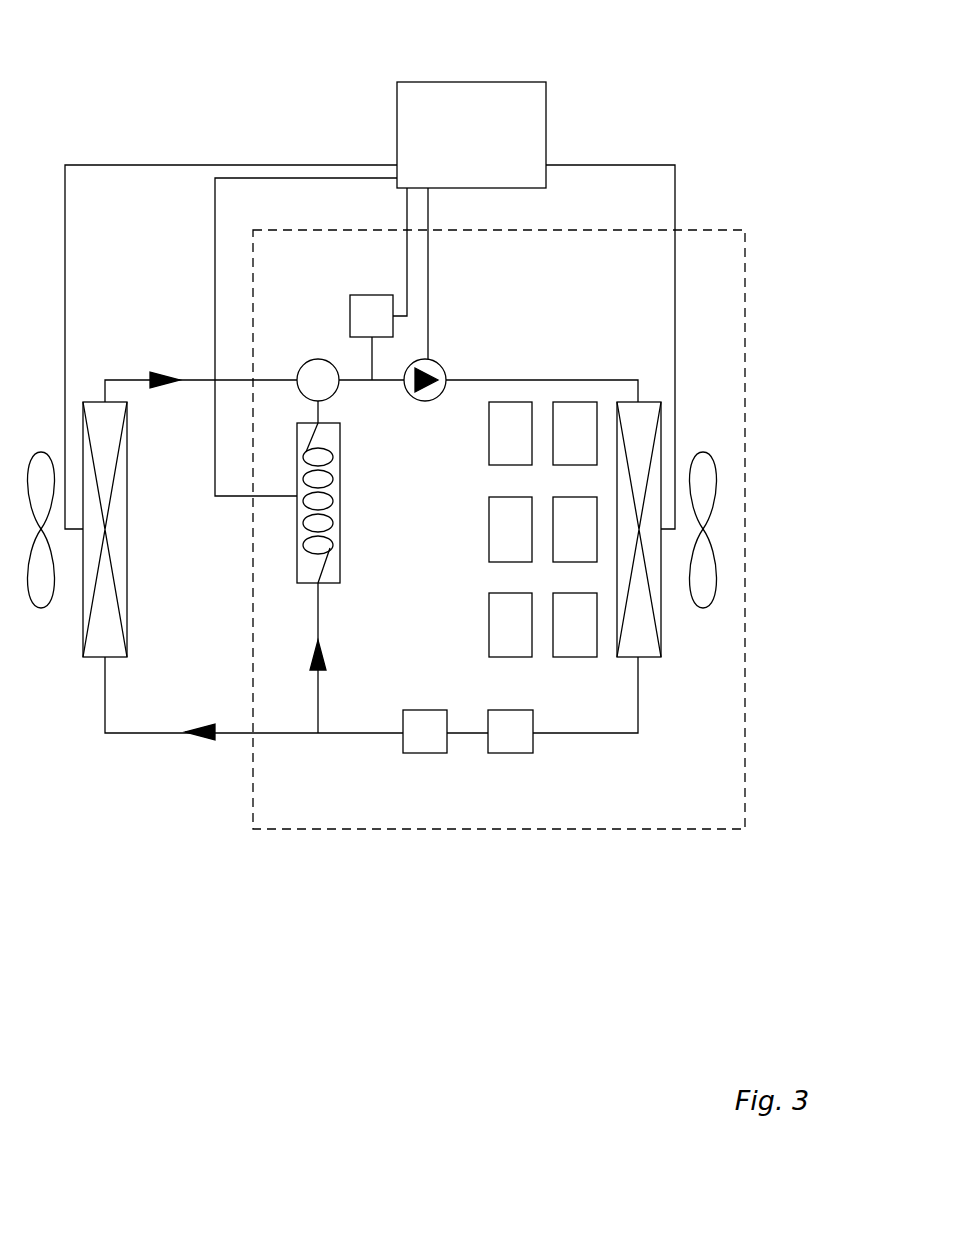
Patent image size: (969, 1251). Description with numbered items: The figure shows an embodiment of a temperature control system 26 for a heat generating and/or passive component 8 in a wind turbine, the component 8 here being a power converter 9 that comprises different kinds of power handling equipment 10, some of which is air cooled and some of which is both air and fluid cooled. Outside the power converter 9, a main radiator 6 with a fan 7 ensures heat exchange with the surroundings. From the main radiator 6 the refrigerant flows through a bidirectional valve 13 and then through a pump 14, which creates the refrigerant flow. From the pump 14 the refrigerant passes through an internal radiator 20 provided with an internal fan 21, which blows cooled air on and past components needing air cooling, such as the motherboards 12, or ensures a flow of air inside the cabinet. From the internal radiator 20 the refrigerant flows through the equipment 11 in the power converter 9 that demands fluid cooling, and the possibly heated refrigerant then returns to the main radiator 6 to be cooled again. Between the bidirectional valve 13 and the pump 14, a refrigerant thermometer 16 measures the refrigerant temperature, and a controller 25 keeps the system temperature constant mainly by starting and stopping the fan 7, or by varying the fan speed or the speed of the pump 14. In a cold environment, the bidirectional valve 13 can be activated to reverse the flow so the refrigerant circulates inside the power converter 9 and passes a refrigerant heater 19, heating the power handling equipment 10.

The temperature control system 26 is at (121, 134).
The controller 25 is at (472, 113).
The bidirectional valve 13 is at (316, 377).
The refrigerant thermometer 16 is at (373, 316).
The pump 14 is at (417, 372).
The refrigerant heater 19 is at (318, 565).
The main radiator 6 is at (95, 420).
The fan 7 is at (37, 477).
The internal radiator 20 is at (643, 632).
The internal fan 21 is at (703, 491).
The power handling equipment 10 is at (525, 523).
The equipment 11 is at (507, 737).
The motherboards 12 is at (520, 635).
The power converter 9 is at (585, 272).
The heat generating and/or passive component 8 is at (697, 262).